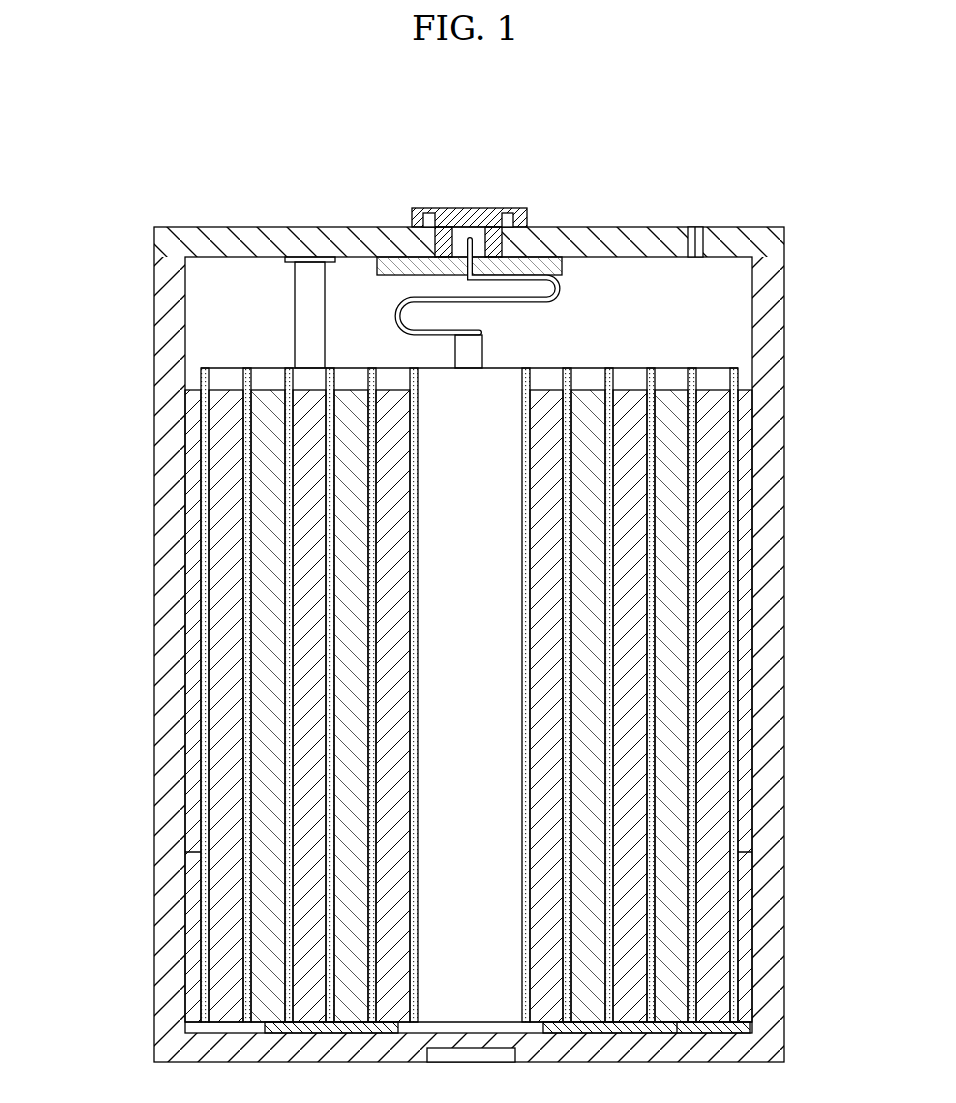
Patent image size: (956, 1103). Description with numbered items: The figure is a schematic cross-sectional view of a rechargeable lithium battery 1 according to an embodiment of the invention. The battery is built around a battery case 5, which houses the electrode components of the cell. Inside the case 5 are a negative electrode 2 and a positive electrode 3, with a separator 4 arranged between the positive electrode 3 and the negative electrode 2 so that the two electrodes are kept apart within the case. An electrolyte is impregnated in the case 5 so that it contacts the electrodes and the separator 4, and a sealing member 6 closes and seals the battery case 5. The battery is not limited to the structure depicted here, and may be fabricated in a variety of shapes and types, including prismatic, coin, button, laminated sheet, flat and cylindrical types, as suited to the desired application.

The rechargeable lithium battery 1 is at (478, 108).
The negative electrode 2 is at (712, 890).
The positive electrode 3 is at (262, 913).
The separator 4 is at (242, 962).
The battery case 5 is at (168, 364).
The sealing member 6 is at (417, 206).